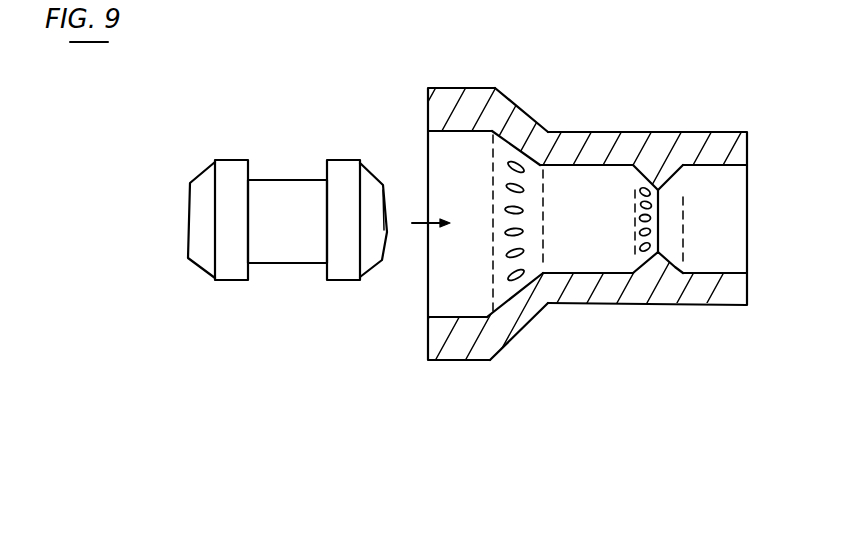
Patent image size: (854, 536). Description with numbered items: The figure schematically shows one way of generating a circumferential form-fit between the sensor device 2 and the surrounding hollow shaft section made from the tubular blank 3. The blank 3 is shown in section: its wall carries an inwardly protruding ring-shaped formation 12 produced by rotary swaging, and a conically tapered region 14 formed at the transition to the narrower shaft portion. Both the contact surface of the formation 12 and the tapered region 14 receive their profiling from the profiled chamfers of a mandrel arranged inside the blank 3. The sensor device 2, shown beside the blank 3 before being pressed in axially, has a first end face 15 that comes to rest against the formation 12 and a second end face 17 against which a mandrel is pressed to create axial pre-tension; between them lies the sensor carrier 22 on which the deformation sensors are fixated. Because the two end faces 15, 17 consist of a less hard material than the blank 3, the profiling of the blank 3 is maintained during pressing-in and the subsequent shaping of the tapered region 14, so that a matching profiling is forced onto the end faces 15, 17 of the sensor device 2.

The sensor device 2 is at (291, 145).
The tubular blank 3 is at (690, 96).
The inwardly protruding ring-shaped formation 12 is at (662, 158).
The conically tapered region 14 is at (521, 122).
The first end face 15 is at (391, 243).
The second end face 17 is at (178, 238).
The sensor carrier 22 is at (291, 248).